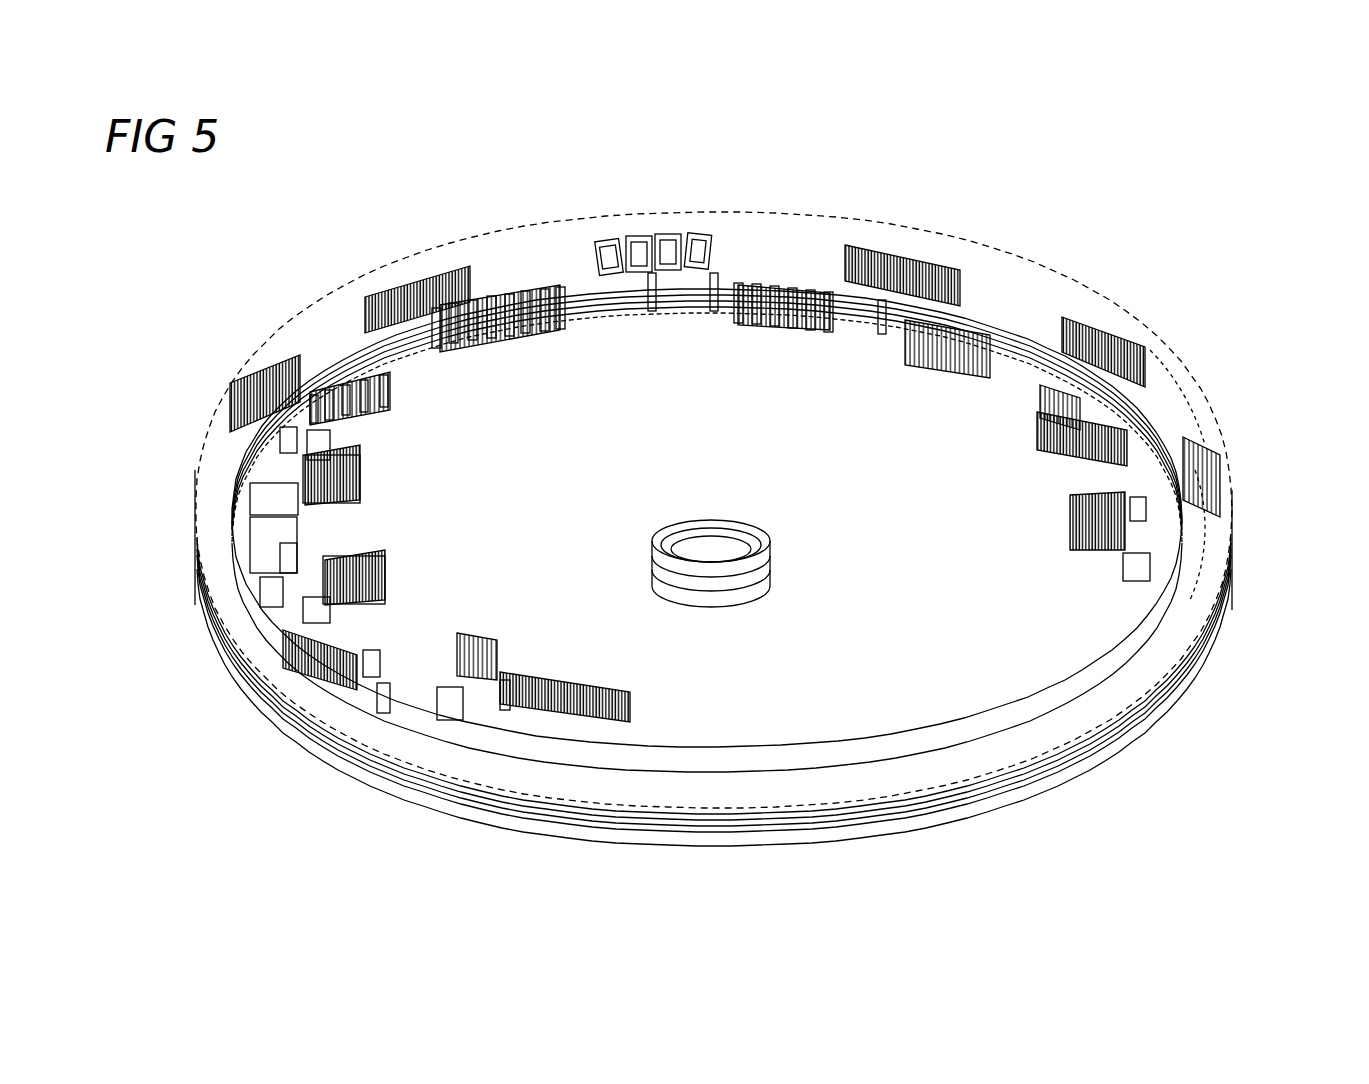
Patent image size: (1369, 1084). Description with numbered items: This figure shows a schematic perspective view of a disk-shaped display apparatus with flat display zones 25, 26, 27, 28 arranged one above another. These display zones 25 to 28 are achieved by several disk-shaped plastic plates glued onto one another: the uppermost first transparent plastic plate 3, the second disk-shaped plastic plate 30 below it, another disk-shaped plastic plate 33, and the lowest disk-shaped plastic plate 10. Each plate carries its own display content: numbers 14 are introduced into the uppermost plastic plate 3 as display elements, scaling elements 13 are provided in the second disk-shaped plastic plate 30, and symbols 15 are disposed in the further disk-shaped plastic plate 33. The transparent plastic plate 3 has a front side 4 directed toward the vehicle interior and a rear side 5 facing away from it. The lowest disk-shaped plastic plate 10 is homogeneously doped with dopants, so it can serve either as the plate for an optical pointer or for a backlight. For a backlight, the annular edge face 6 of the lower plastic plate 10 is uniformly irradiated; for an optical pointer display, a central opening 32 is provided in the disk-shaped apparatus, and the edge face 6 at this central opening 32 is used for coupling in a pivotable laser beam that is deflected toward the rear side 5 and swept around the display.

The transparent plastic plate 3 is at (1232, 495).
The front side 4 is at (1042, 262).
The rear side 5 is at (902, 850).
The edge face 6 is at (276, 648).
The disk-shaped plastic plate 10 is at (1278, 578).
The scaling elements 13 is at (520, 345).
The numbers 14 is at (700, 238).
The symbols 15 is at (352, 485).
The display zone 25 is at (462, 272).
The display zone 26 is at (342, 410).
The display zone 27 is at (383, 570).
The display zone 28 is at (175, 625).
The second disk-shaped plastic plate 30 is at (1232, 522).
The central opening 32 is at (735, 562).
The disk-shaped plastic plate 33 is at (1305, 550).